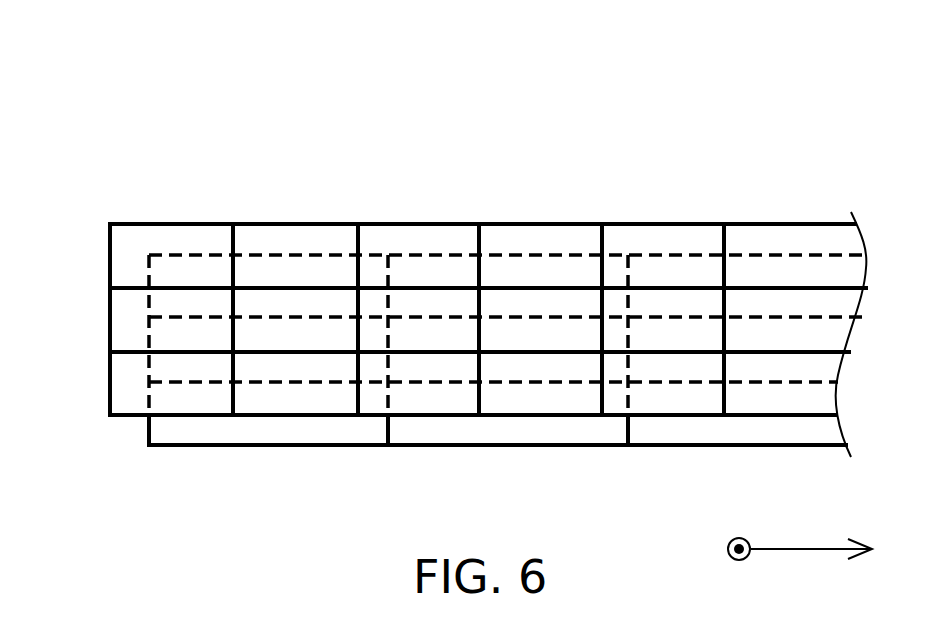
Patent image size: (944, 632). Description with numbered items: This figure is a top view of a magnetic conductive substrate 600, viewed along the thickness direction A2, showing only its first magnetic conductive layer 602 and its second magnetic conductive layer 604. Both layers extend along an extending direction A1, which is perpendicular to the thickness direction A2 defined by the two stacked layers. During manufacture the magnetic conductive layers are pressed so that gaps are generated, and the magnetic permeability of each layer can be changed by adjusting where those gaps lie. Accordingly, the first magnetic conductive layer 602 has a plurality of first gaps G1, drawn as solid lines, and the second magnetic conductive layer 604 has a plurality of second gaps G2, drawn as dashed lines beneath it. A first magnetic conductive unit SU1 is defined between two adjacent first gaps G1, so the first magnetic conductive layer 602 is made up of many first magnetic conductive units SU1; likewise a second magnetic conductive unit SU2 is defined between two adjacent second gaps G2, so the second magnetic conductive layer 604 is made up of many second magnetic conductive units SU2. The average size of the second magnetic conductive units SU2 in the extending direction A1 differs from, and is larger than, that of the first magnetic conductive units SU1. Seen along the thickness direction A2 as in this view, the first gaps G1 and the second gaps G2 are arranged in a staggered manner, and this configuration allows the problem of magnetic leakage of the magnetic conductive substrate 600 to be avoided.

The magnetic conductive substrate 600 is at (215, 78).
The first magnetic conductive layer 602 is at (573, 224).
The second magnetic conductive layer 604 is at (184, 446).
The first gaps G1 is at (231, 239).
The second gaps G2 is at (384, 274).
The first magnetic conductive unit SU1 is at (139, 240).
The second magnetic conductive unit SU2 is at (536, 426).
The extending direction A1 is at (831, 550).
The thickness direction A2 is at (740, 533).